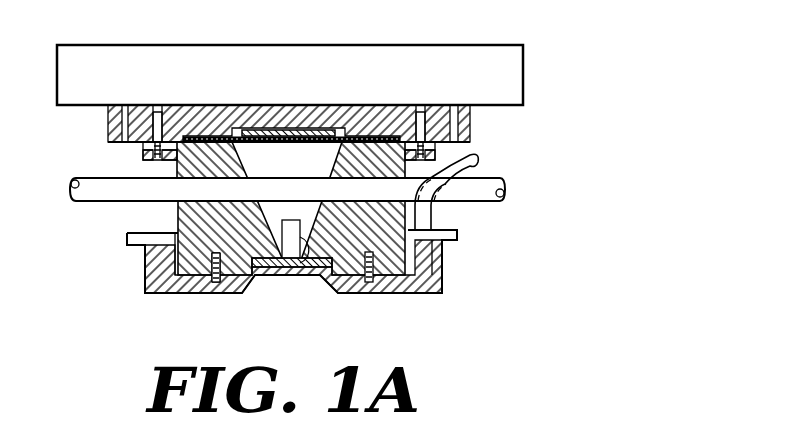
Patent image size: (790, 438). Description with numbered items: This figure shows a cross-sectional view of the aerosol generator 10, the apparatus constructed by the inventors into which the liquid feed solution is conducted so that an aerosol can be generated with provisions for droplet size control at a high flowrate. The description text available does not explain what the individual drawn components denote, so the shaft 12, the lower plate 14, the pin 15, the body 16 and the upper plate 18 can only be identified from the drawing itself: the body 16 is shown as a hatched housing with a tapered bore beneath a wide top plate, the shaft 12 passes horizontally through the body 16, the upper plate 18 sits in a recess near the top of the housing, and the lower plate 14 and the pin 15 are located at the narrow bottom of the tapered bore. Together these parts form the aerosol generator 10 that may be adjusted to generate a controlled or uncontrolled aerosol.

The aerosol generator 10 is at (78, 33).
The shaft 12 is at (92, 194).
The plate 14 is at (287, 268).
The pin 15 is at (300, 237).
The body with conical bore 16 is at (235, 210).
The upper plate 18 is at (298, 130).